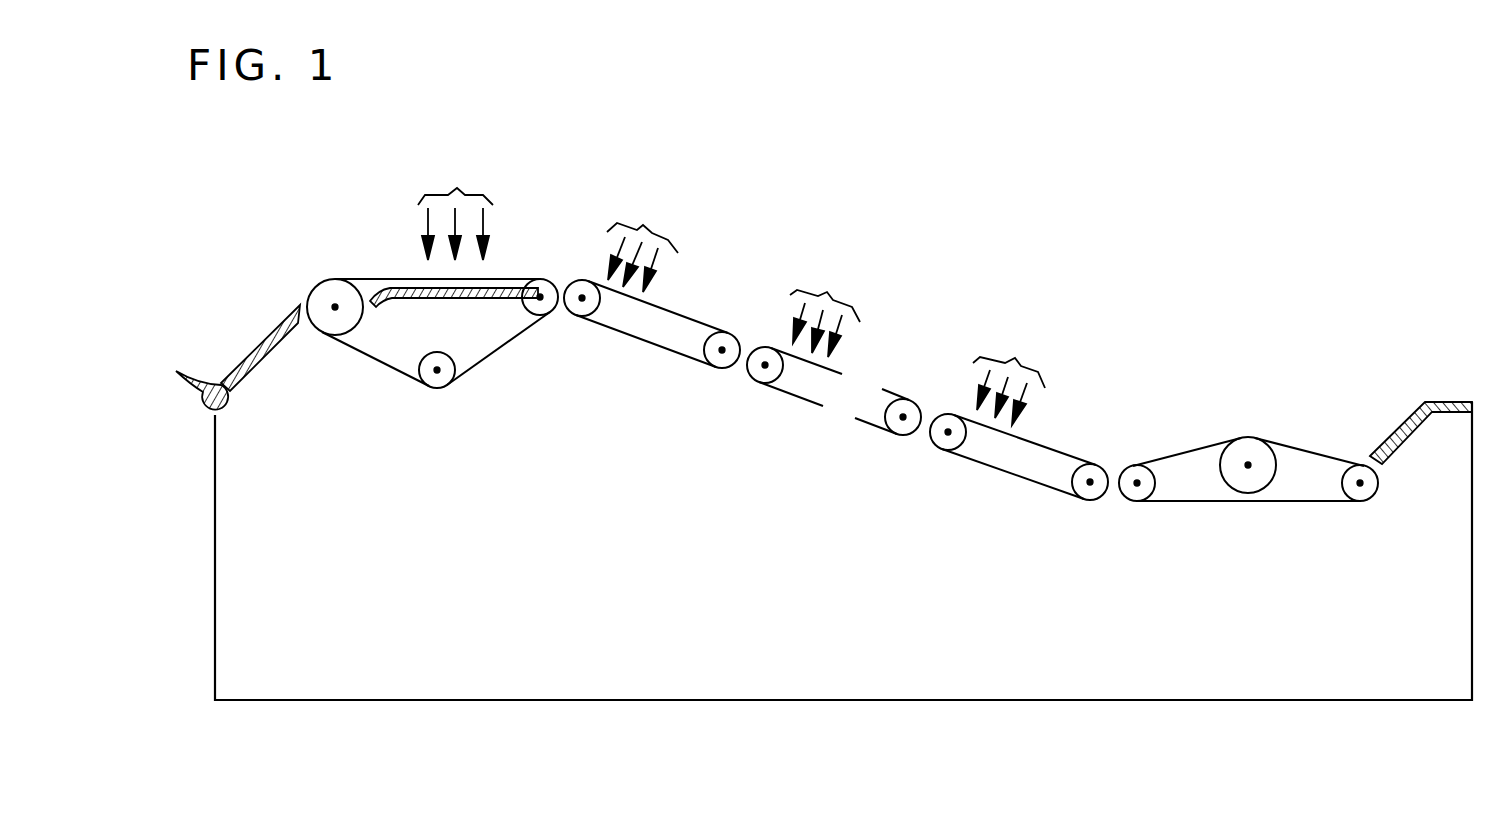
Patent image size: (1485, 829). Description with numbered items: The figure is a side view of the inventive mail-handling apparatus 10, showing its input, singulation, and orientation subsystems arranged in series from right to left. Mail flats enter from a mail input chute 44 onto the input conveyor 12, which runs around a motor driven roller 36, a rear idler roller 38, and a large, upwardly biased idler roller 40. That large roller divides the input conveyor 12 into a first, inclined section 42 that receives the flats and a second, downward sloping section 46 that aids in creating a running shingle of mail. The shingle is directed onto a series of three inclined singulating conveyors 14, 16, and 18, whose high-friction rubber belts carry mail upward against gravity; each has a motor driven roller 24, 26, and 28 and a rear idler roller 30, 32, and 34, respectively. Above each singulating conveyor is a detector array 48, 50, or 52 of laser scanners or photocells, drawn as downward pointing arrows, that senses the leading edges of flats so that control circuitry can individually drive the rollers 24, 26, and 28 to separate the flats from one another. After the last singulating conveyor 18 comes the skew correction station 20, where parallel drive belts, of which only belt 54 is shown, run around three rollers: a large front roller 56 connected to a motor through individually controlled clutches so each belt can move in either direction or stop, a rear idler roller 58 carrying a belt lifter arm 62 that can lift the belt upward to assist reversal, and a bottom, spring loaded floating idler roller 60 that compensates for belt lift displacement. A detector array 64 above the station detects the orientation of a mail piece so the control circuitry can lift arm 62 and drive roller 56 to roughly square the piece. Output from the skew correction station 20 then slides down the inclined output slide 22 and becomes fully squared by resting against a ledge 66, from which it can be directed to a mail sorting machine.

The apparatus 10 is at (966, 252).
The input conveyor 12 is at (1262, 502).
The singulating conveyor 14 is at (1018, 475).
The singulating conveyor 16 is at (837, 410).
The singulating conveyor 18 is at (630, 337).
The skew correction station 20 is at (397, 333).
The inclined output slide 22 is at (270, 343).
The motor driven roller 24 is at (948, 434).
The motor driven roller 26 is at (765, 367).
The motor driven roller 28 is at (582, 300).
The rear idler roller 30 is at (1090, 484).
The rear idler roller 32 is at (903, 417).
The rear idler roller 34 is at (722, 350).
The motor driven roller 36 is at (1137, 485).
The rear idler roller 38 is at (1360, 485).
The upwardly biased idler roller 40 is at (1248, 463).
The inclined section 42 is at (1307, 452).
The mail input chute 44 is at (1418, 412).
The downward sloping section 46 is at (1193, 450).
The detector array 48 is at (1009, 377).
The detector array 50 is at (825, 311).
The detector array 52 is at (642, 244).
The drive belt 54 is at (397, 278).
The front roller 56 is at (333, 303).
The rear idler roller 58 is at (538, 296).
The bottom idler roller 60 is at (437, 372).
The belt lifter arm 62 is at (488, 298).
The detector array 64 is at (455, 209).
The ledge 66 is at (200, 398).